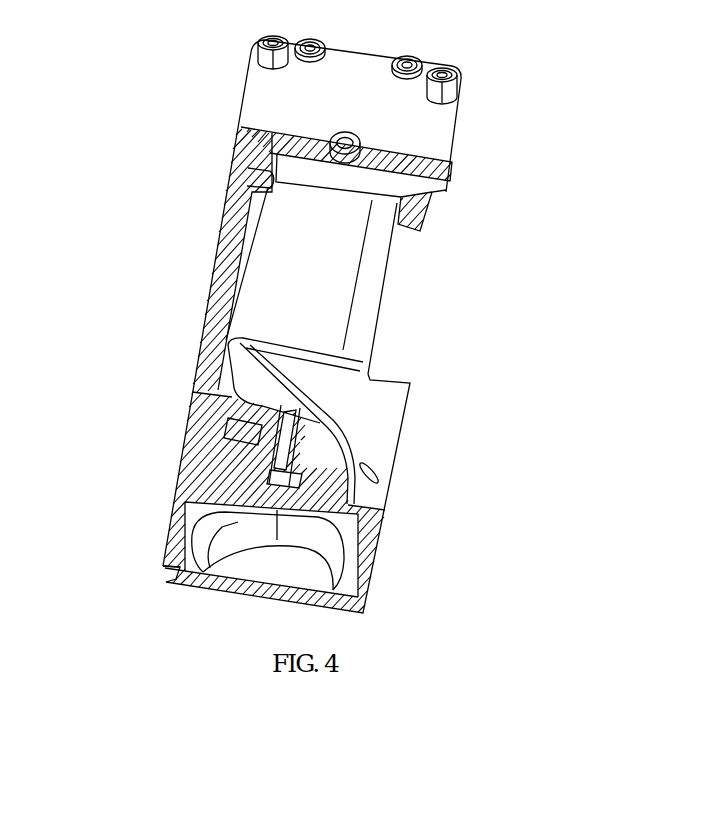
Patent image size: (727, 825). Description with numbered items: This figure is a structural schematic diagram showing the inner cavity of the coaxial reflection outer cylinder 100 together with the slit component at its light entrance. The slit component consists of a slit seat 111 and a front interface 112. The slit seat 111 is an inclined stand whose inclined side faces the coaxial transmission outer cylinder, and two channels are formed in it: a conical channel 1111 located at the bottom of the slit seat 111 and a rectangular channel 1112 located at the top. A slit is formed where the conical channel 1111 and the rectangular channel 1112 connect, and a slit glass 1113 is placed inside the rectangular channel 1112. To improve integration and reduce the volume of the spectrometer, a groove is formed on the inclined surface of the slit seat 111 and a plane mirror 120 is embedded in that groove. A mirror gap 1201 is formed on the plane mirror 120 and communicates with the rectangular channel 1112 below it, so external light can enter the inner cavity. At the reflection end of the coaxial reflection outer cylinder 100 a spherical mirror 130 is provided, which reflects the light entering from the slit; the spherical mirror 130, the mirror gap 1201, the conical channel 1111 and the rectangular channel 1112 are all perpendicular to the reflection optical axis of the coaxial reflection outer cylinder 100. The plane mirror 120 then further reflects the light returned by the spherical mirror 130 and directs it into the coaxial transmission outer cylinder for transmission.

The coaxial reflection outer cylinder 100 is at (205, 318).
The spherical mirror 130 is at (342, 178).
The plane mirror 120 is at (257, 388).
The mirror gap 1201 is at (300, 432).
The conical channel 1111 is at (300, 502).
The rectangular channel 1112 is at (255, 474).
The slit glass 1113 is at (262, 480).
The slit seat 111 is at (222, 477).
The front interface 112 is at (167, 567).